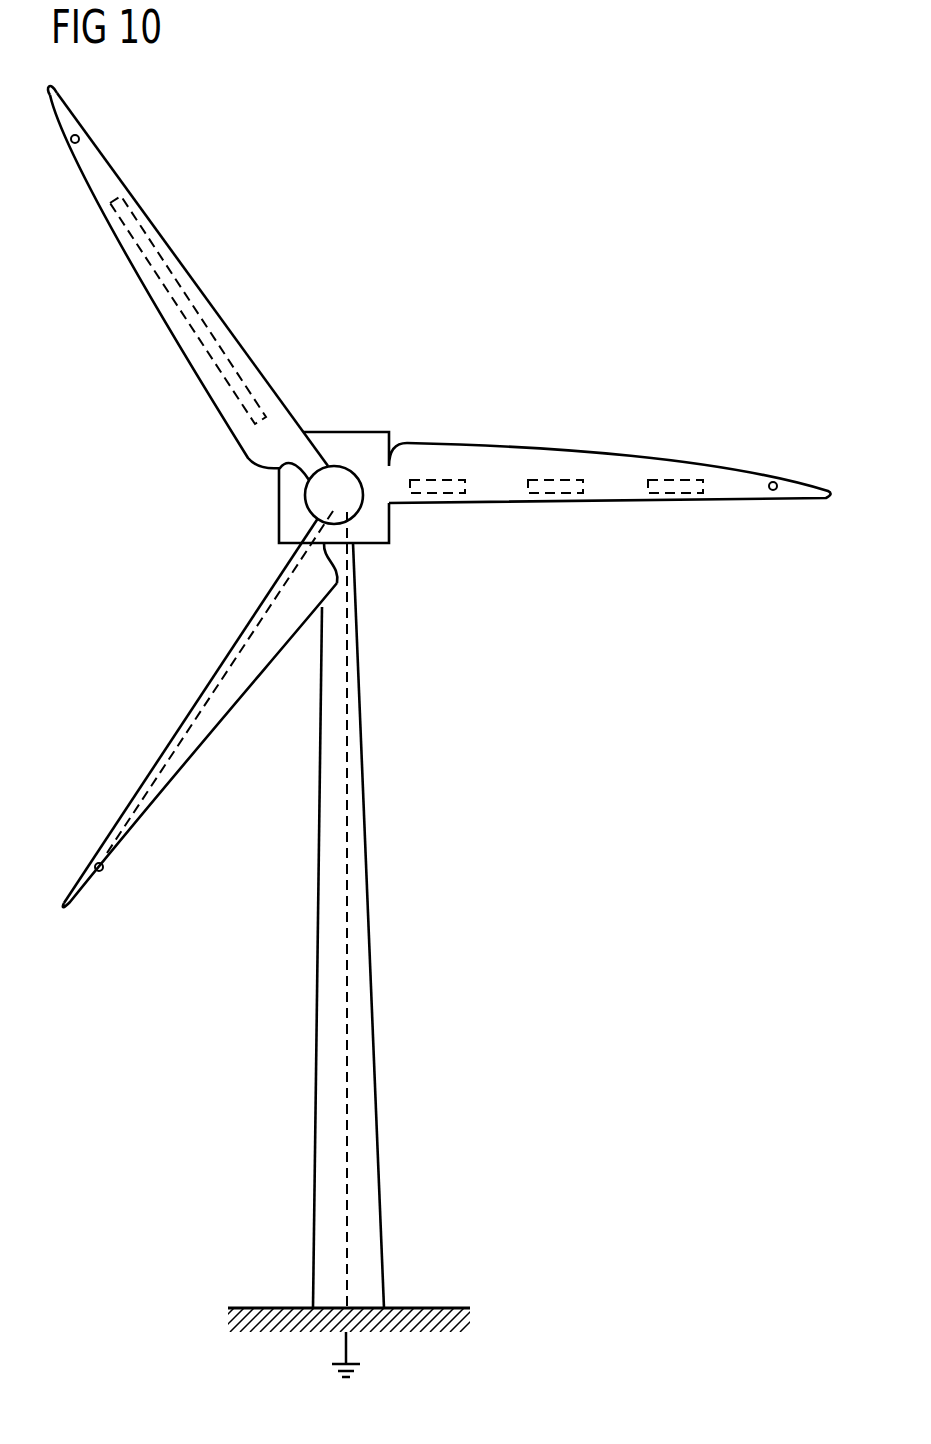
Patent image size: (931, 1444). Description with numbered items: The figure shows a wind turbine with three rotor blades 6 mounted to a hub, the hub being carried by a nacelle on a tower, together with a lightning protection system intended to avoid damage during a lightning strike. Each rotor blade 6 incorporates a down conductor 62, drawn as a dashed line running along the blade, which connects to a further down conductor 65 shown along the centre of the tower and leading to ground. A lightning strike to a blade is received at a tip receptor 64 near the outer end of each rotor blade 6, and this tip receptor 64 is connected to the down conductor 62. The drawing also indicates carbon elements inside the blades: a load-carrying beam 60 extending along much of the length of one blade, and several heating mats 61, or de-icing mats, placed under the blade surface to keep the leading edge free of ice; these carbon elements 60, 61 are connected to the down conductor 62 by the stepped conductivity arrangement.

The rotor blade 6 is at (107, 177).
The load-carrying beam 60 is at (220, 347).
The heating mat 61 is at (435, 492).
The down conductor 62 is at (190, 728).
The tip receptor 64 is at (79, 137).
The further down conductor 65 is at (346, 893).